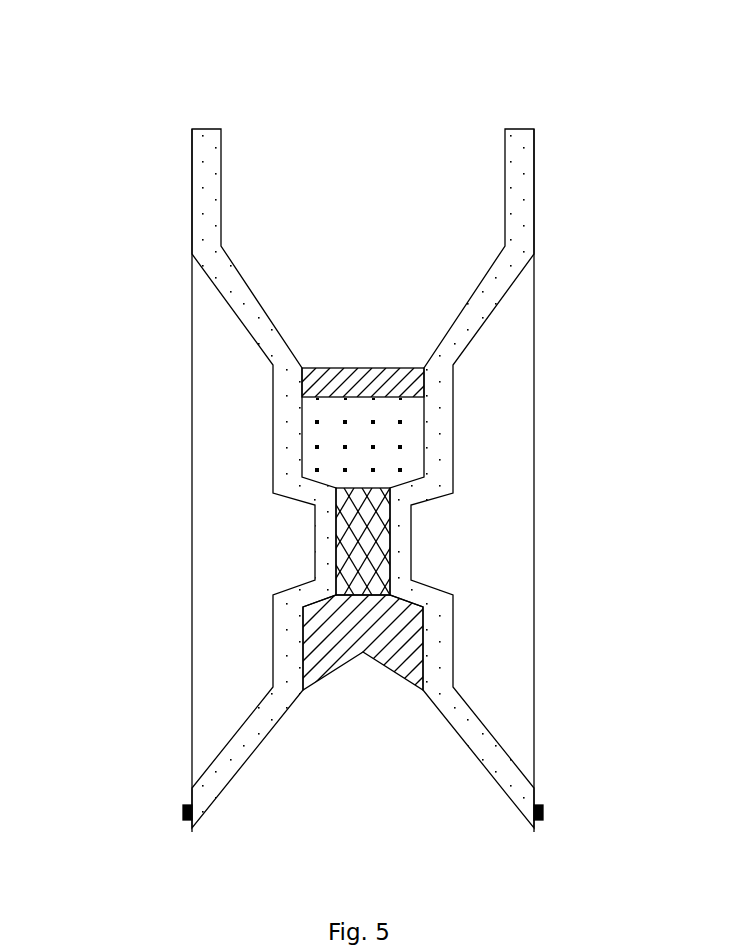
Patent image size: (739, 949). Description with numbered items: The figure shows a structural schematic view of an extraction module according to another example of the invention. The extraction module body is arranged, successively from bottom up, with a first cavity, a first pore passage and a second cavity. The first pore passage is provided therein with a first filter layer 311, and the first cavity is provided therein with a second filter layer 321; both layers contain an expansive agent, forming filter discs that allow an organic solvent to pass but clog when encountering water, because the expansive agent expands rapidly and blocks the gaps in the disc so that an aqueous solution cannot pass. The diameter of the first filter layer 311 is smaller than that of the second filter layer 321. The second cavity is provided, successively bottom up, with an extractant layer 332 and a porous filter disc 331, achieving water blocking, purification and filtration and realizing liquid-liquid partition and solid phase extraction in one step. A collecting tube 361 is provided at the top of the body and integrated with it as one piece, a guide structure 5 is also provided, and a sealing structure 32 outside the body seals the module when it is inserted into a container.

The guide structure 5 is at (460, 480).
The collecting tube 361 is at (432, 426).
The porous filter disc 331 is at (342, 271).
The extractant layer 332 is at (491, 378).
The first filter layer 311 is at (231, 485).
The second filter layer 321 is at (274, 670).
The sealing structure 32 is at (288, 843).